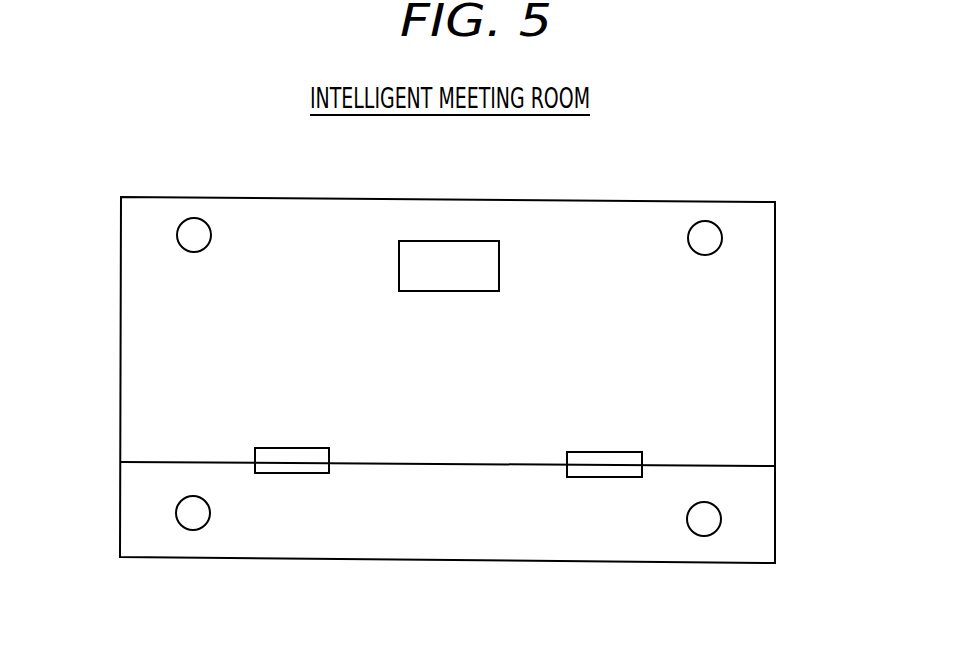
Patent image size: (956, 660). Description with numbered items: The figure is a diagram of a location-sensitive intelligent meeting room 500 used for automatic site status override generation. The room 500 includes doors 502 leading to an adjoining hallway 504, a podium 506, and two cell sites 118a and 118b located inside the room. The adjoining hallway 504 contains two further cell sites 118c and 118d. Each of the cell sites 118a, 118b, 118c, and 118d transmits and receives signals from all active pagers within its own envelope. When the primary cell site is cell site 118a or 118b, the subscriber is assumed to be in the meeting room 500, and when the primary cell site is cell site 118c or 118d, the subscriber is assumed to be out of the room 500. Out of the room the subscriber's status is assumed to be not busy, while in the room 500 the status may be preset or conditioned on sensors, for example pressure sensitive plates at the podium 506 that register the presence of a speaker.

The intelligent meeting room 500 is at (468, 181).
The doors 502 is at (775, 515).
The adjoining hallway 504 is at (448, 292).
The podium 506 is at (296, 446).
The cell site 118a is at (192, 252).
The cell site 118b is at (703, 255).
The cell site 118c is at (210, 513).
The cell site 118d is at (687, 516).